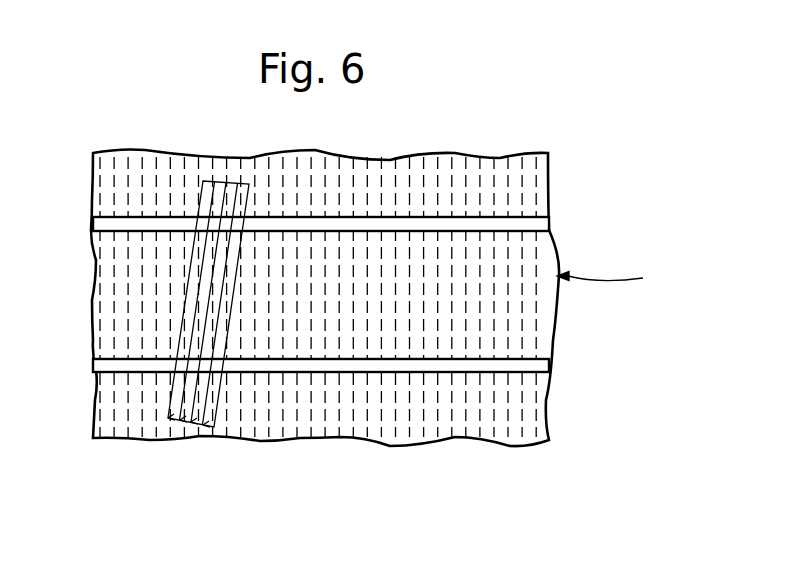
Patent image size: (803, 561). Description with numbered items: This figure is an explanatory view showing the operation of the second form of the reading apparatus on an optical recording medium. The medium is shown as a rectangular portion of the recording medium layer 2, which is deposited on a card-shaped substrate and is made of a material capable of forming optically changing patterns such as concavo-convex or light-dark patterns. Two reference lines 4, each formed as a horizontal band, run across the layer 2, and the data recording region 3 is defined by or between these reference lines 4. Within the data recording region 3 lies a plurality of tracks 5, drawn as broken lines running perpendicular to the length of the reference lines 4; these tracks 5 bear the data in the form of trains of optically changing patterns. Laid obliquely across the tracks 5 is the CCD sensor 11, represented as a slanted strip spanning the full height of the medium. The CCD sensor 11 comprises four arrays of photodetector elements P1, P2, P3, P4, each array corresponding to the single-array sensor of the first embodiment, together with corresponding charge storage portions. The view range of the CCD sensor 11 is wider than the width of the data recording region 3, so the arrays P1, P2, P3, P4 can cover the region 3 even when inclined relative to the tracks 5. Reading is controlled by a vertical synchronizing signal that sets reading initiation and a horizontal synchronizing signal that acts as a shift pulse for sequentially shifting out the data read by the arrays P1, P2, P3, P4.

The recording medium layer 2 is at (541, 178).
The data recording region 3 is at (609, 277).
The reference line 4 is at (540, 221).
The track 5 is at (523, 313).
The CCD sensor 11 is at (205, 180).
The array of photodetector elements P1 is at (168, 418).
The array of photodetector elements P2 is at (180, 420).
The array of photodetector elements P3 is at (191, 422).
The array of photodetector elements P4 is at (214, 427).